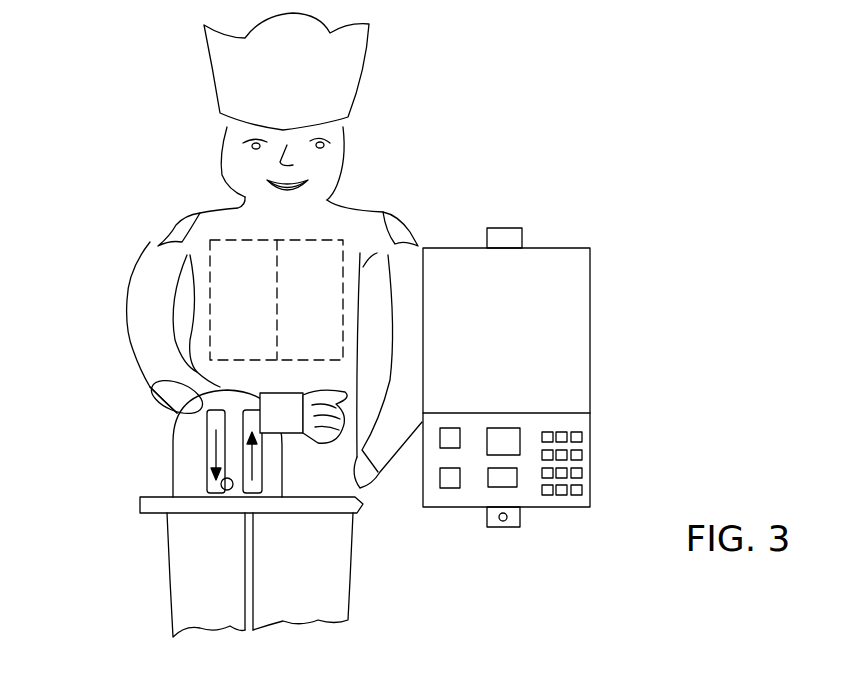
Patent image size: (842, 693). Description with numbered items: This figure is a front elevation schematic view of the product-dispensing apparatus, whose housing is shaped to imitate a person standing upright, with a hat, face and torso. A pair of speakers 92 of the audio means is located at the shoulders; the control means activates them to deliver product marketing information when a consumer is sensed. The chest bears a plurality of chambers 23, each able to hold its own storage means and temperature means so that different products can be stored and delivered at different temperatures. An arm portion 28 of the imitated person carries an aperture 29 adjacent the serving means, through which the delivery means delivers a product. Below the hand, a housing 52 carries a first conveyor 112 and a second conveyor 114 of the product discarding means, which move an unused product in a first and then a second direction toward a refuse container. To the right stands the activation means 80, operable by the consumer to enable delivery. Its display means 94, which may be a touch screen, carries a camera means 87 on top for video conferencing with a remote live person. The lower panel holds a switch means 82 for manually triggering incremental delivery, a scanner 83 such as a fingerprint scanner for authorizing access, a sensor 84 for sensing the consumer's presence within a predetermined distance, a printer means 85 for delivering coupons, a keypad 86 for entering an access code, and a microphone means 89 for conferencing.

The chamber 23 is at (229, 313).
The arm portion 28 is at (155, 347).
The aperture 29 is at (150, 387).
The card reader housing 52 is at (231, 476).
The activation means 80 is at (533, 393).
The switch means 82 is at (438, 445).
The scanner 83 is at (452, 488).
The sensor 84 is at (498, 555).
The printer means 85 is at (507, 440).
The keypad 86 is at (583, 457).
The camera means 87 is at (512, 228).
The microphone means 89 is at (518, 486).
The speakers 92 is at (173, 232).
The display means 94 is at (570, 310).
The first conveyor 112 is at (227, 491).
The second conveyor 114 is at (263, 481).